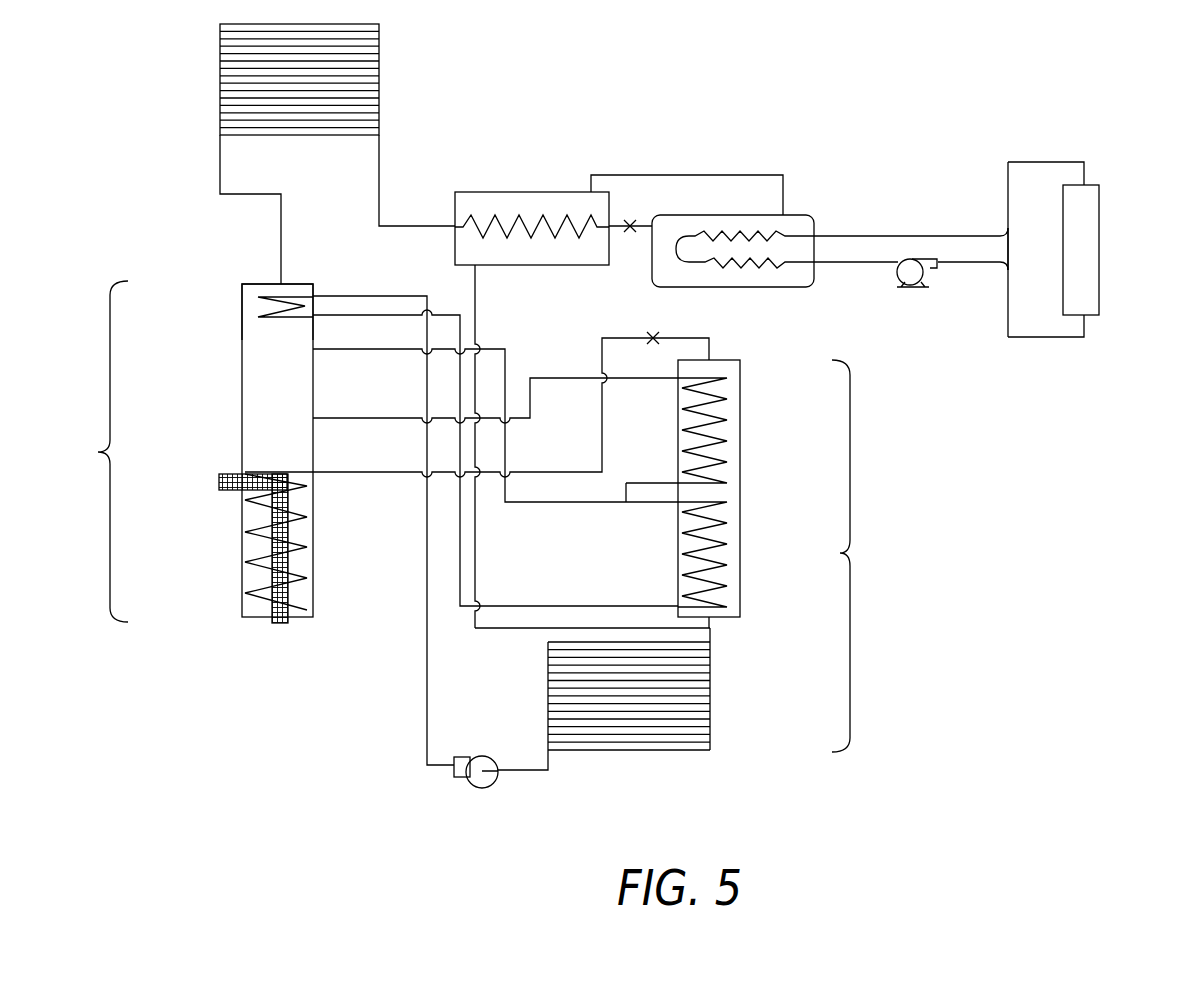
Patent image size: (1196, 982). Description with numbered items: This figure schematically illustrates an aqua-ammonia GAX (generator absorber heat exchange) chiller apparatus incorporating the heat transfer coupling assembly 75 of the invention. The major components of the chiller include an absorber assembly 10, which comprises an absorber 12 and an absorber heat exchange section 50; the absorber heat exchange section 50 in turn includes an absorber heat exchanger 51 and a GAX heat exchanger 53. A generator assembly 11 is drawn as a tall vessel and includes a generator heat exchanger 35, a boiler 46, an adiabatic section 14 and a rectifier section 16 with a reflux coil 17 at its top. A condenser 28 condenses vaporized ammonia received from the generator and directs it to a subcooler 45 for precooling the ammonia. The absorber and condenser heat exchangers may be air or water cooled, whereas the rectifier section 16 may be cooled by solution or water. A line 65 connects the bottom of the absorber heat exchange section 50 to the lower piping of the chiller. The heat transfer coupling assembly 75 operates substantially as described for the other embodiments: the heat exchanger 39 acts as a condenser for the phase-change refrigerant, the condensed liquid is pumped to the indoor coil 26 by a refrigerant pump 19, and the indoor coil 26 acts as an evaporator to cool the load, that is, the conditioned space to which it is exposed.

The absorber assembly 10 is at (863, 556).
The generator assembly 11 is at (94, 451).
The absorber 12 is at (710, 713).
The adiabatic section 14 is at (242, 380).
The rectifier section 16 is at (242, 317).
The reflux coil 17 is at (295, 300).
The refrigerant pump 19 is at (917, 278).
The indoor coil 26 is at (1100, 223).
The condenser 28 is at (218, 80).
The generator heat exchanger 35 is at (262, 537).
The heat exchanger 39 is at (815, 215).
The subcooler 45 is at (568, 192).
The boiler 46 is at (280, 628).
The absorber heat exchange section 50 is at (740, 475).
The absorber heat exchanger 51 is at (718, 538).
The GAX heat exchanger 53 is at (718, 415).
The refrigerant line 65 is at (710, 628).
The heat transfer coupling assembly 75 is at (968, 206).